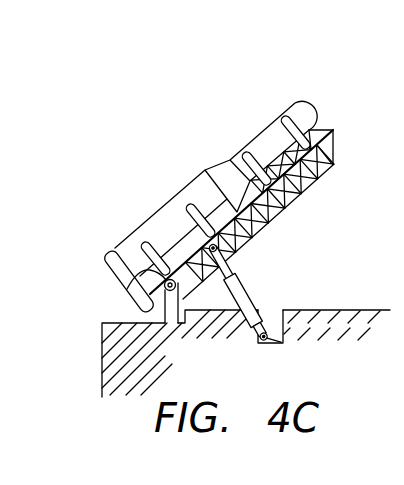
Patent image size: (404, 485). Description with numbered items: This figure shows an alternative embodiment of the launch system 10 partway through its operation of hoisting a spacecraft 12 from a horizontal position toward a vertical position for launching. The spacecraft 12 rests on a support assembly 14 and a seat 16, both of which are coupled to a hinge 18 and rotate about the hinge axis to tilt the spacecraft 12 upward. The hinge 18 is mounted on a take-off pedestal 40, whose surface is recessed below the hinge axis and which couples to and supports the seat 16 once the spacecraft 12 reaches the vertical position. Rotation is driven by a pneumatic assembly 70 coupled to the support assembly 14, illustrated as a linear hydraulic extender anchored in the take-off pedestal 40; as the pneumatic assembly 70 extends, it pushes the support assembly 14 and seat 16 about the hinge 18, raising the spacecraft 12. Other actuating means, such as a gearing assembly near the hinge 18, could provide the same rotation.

The launch system 10 is at (167, 112).
The spacecraft 12 is at (164, 208).
The support assembly 14 is at (334, 116).
The seat 16 is at (110, 252).
The hinge 18 is at (112, 294).
The take-off pedestal 40 is at (102, 364).
The pneumatic assembly 70 is at (250, 282).